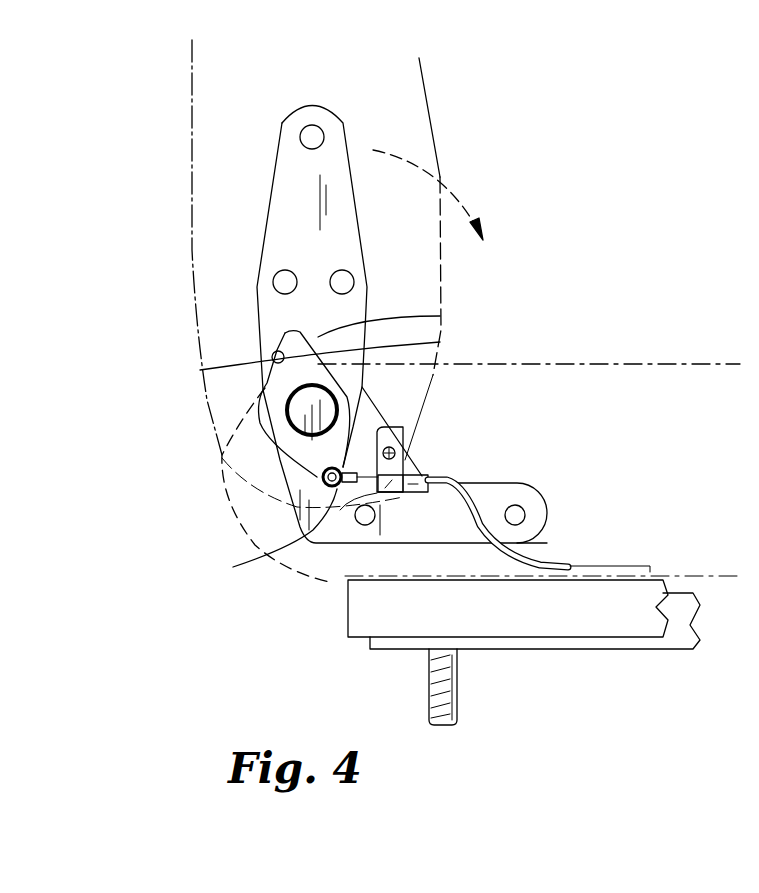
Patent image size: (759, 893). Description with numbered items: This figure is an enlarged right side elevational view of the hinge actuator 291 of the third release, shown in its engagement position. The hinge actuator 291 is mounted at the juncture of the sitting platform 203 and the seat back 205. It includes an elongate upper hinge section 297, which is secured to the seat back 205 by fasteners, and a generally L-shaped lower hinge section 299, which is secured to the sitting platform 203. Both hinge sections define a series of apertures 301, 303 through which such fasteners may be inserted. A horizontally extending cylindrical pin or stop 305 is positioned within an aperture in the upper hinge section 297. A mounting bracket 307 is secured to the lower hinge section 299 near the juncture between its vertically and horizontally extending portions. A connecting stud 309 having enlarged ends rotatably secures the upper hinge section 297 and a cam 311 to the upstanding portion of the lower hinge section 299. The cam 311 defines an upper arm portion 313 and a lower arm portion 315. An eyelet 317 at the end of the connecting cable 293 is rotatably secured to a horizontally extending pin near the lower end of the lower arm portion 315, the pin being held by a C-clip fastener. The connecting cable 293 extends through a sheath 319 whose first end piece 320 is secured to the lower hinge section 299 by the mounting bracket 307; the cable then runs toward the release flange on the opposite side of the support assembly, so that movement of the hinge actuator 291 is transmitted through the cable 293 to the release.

The sitting platform 203 is at (615, 361).
The seat back 205 is at (430, 107).
The hinge actuator 291 is at (230, 517).
The connecting cable 293 is at (630, 565).
The upper hinge section 297 is at (282, 135).
The lower hinge section 299 is at (492, 482).
The apertures 301 is at (300, 137).
The apertures 303 is at (525, 515).
The pin 305 is at (272, 358).
The mounting bracket 307 is at (397, 437).
The connecting stud 309 is at (287, 411).
The cam 311 is at (440, 316).
The upper arm portion 313 is at (440, 342).
The lower arm portion 315 is at (322, 473).
The eyelet 317 is at (258, 537).
The sheath 319 is at (540, 557).
The first end piece 320 is at (420, 473).